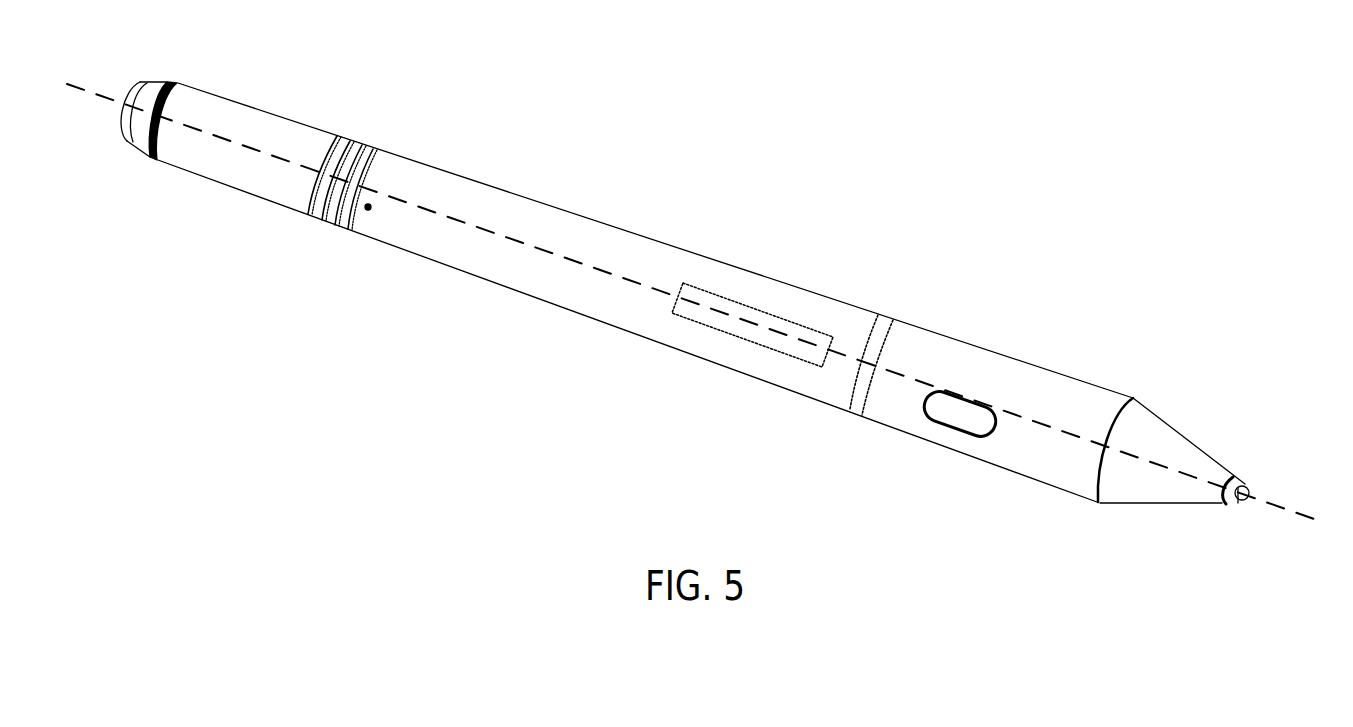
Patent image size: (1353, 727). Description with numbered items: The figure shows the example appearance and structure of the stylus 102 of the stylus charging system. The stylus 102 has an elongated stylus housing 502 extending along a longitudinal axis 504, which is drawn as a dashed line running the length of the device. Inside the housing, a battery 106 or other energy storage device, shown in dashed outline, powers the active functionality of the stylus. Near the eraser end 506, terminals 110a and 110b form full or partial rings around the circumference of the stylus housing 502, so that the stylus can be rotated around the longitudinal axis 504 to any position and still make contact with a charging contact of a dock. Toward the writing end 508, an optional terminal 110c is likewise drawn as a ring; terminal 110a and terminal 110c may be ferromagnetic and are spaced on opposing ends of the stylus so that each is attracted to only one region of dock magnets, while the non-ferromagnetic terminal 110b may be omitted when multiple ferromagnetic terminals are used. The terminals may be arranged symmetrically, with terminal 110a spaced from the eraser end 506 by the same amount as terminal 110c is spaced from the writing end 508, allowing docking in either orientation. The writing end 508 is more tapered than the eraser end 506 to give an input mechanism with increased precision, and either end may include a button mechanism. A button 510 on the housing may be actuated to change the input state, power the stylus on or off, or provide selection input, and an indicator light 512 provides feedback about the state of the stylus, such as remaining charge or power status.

The stylus 102 is at (709, 279).
The battery 106 is at (737, 300).
The terminal 110a is at (338, 134).
The terminal 110b is at (374, 148).
The terminal 110c is at (887, 322).
The stylus housing 502 is at (509, 181).
The longitudinal axis 504 is at (1312, 514).
The eraser end 506 is at (162, 66).
The writing end 508 is at (1173, 415).
The button 510 is at (951, 426).
The indicator light 512 is at (368, 214).